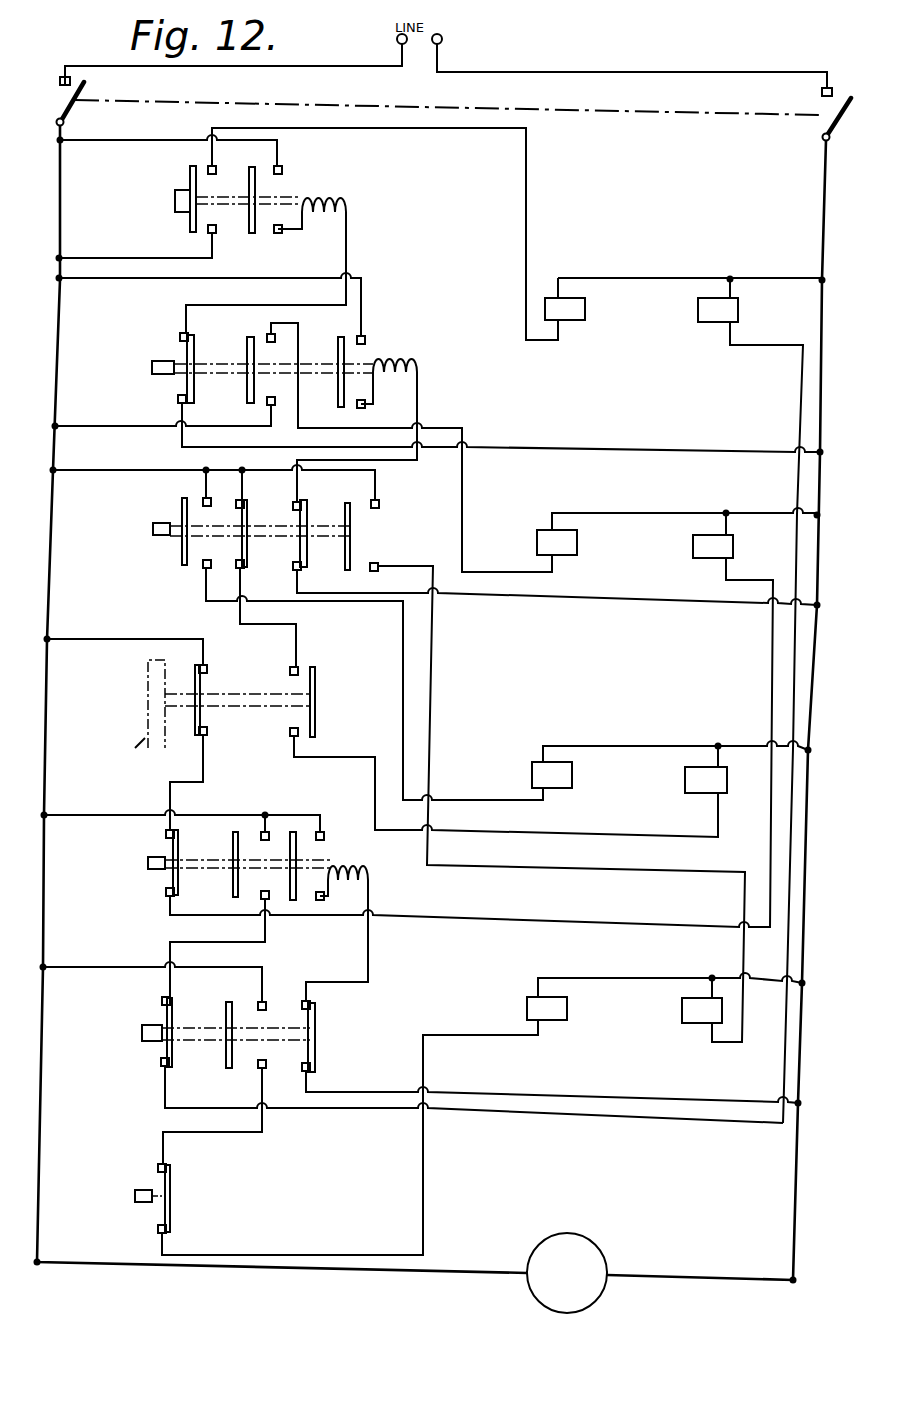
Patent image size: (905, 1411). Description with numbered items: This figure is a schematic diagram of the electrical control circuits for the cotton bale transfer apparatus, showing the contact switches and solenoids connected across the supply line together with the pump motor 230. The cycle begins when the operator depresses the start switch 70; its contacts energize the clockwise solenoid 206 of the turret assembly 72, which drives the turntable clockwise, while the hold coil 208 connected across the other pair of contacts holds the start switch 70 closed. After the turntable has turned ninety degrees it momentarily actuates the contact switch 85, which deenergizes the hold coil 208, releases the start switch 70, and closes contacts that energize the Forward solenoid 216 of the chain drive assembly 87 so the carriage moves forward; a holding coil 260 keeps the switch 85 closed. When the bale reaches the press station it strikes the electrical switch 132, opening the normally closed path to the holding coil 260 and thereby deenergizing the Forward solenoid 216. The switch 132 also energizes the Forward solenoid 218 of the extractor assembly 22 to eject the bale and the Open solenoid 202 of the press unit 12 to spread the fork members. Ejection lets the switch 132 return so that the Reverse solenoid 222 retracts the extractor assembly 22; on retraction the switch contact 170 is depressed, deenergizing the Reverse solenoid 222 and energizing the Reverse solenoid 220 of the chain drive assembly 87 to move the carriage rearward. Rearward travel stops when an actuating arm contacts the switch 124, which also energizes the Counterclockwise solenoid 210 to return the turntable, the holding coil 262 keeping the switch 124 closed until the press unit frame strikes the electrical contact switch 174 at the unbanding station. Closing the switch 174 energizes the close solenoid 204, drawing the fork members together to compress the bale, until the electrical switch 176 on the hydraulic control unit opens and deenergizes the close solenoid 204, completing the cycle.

The start switch 70 is at (162, 212).
The hold coil 208 is at (266, 265).
The contact switch 85 is at (147, 380).
The holding coil 260 is at (400, 388).
The clockwise solenoid 206 is at (572, 322).
The Counterclockwise solenoid 210 is at (716, 323).
The turret assembly 72 is at (642, 337).
The electrical switch 132 is at (146, 543).
The Forward solenoid 216 is at (575, 557).
The Reverse solenoid 220 is at (735, 545).
The chain drive assembly 87 is at (661, 565).
The switch contact 170 is at (140, 700).
The Forward solenoid 218 is at (532, 776).
The Reverse solenoid 222 is at (702, 794).
The extractor assembly 22 is at (600, 788).
The switch 124 is at (146, 876).
The holding coil 262 is at (352, 875).
The close solenoid 204 is at (527, 1006).
The Open solenoid 202 is at (700, 1024).
The press unit 12 is at (592, 1032).
The electrical contact switch 174 is at (136, 1053).
The electrical switch 176 is at (124, 1212).
The pump motor 230 is at (593, 1243).